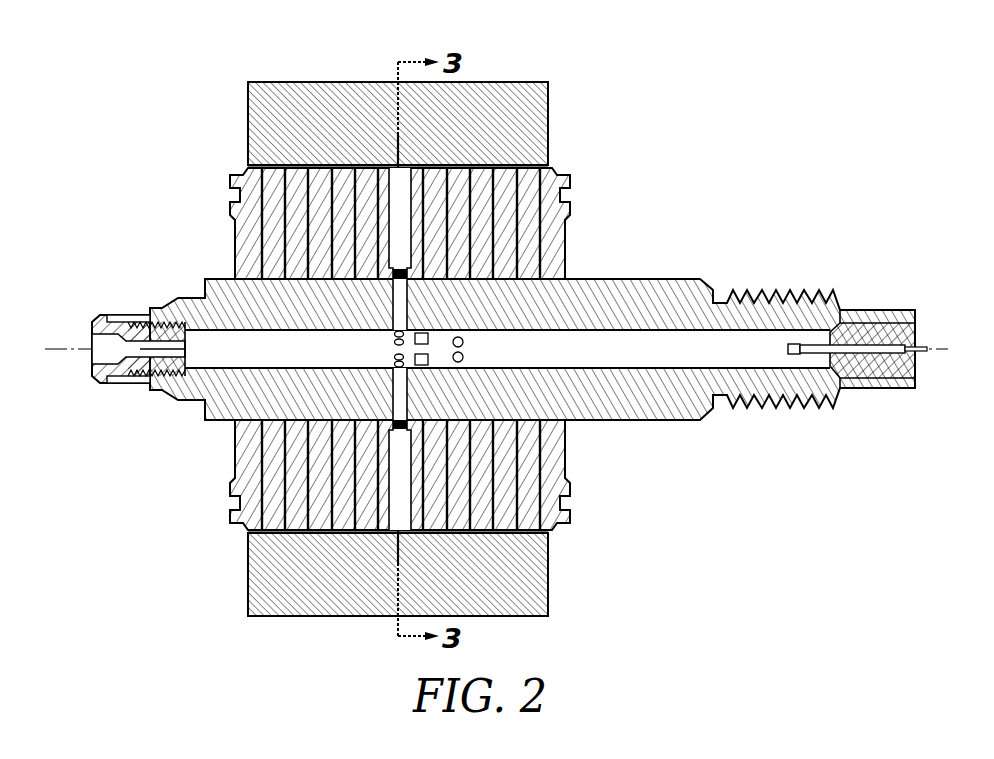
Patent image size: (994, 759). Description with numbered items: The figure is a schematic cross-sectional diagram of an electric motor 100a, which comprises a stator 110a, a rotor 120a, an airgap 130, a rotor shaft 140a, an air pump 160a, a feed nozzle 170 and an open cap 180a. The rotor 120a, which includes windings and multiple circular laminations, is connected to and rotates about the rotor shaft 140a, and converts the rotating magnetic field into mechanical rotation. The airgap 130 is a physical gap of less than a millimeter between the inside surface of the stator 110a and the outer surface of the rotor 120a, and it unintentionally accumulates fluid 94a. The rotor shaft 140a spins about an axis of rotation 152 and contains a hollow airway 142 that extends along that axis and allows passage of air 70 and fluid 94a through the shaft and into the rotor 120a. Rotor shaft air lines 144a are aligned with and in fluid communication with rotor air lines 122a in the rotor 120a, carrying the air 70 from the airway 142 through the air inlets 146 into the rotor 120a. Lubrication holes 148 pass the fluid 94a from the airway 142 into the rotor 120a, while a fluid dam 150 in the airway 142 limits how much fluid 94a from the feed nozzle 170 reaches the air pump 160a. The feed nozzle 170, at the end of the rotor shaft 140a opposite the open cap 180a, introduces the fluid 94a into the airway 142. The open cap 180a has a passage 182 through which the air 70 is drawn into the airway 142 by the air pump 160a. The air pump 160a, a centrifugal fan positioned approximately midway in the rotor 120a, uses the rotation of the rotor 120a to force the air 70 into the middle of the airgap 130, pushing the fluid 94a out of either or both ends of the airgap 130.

The electric motor 100a is at (190, 77).
The stator 110a is at (247, 132).
The rotor 120a is at (236, 245).
The airgap 130 is at (245, 167).
The air pump 160a is at (392, 200).
The air 70 is at (550, 167).
The fluid 94a is at (550, 167).
The rotor shaft 140a is at (662, 278).
The airway 142 is at (278, 361).
The rotor shaft air line 144a is at (392, 313).
The rotor air line 122a is at (407, 271).
The air inlet 146 is at (392, 342).
The lubrication hole 148 is at (463, 357).
The fluid dam 150 is at (418, 373).
The axis of rotation 152 is at (938, 345).
The feed nozzle 170 is at (878, 357).
The open cap 180a is at (103, 315).
The passage 182 is at (162, 350).